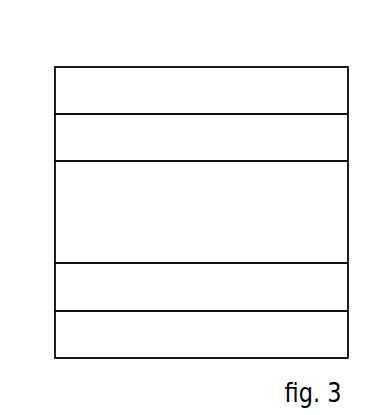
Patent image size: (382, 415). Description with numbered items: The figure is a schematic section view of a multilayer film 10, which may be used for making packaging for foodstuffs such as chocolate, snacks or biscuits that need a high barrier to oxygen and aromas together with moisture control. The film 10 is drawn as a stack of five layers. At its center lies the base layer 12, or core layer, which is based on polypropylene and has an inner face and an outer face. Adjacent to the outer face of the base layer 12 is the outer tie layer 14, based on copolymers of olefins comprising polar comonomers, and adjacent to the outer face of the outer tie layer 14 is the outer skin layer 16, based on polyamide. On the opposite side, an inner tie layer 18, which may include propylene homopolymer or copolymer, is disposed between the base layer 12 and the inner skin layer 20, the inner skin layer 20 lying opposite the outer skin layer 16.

The multilayer film 10 is at (44, 73).
The base layer 12 is at (214, 222).
The outer tie layer 14 is at (214, 148).
The outer skin layer 16 is at (214, 102).
The inner tie layer 18 is at (214, 300).
The inner skin layer 20 is at (214, 346).